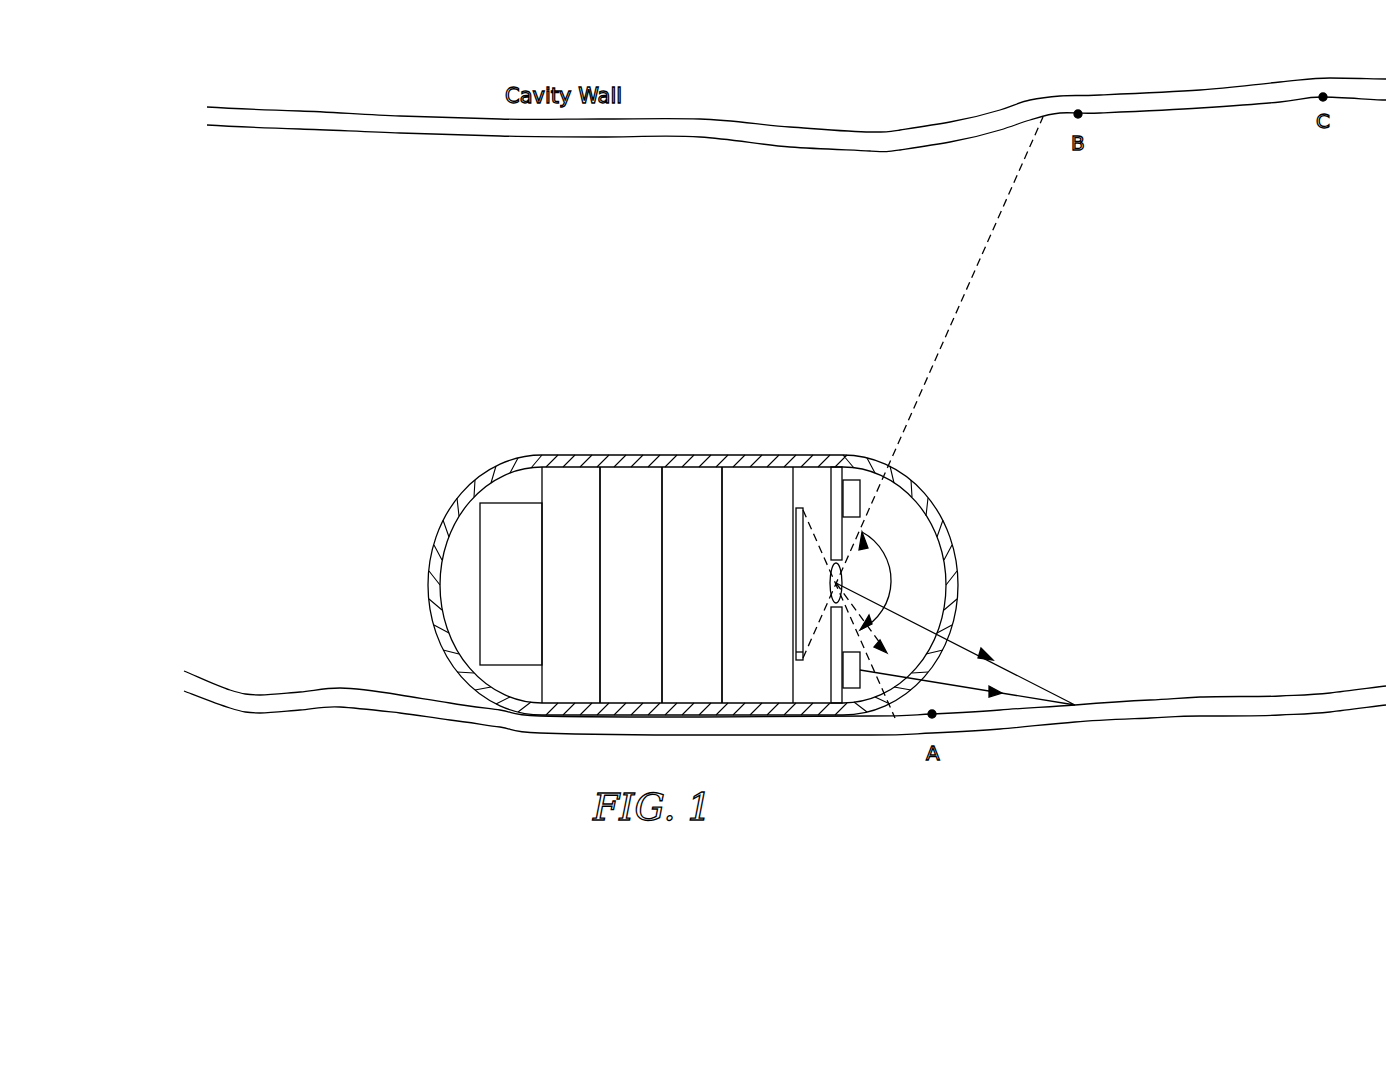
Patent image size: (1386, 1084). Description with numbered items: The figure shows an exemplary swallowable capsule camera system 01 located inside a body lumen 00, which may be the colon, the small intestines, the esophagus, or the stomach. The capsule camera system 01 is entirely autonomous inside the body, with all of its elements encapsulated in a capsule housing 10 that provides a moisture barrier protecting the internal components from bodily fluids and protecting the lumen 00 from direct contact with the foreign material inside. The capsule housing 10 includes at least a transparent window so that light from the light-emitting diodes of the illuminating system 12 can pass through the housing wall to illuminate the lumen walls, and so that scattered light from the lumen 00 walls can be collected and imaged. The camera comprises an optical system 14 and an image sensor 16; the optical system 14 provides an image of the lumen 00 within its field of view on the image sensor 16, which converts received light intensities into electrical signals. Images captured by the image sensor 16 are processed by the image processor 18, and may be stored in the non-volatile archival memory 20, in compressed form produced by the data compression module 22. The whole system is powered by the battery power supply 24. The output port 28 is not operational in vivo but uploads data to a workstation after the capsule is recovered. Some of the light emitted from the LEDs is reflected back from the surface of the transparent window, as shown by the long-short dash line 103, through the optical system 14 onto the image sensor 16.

The body lumen 00 is at (1166, 428).
The capsule camera system 01 is at (420, 435).
The capsule housing 10 is at (928, 505).
The illuminating system 12 is at (851, 480).
The optical system 14 is at (833, 563).
The image sensor 16 is at (800, 665).
The image processor 18 is at (766, 651).
The archival memory 20 is at (643, 623).
The data compression module 22 is at (705, 636).
The battery power supply 24 is at (584, 610).
The output port 28 is at (412, 573).
The long-short dash line 103 is at (895, 662).